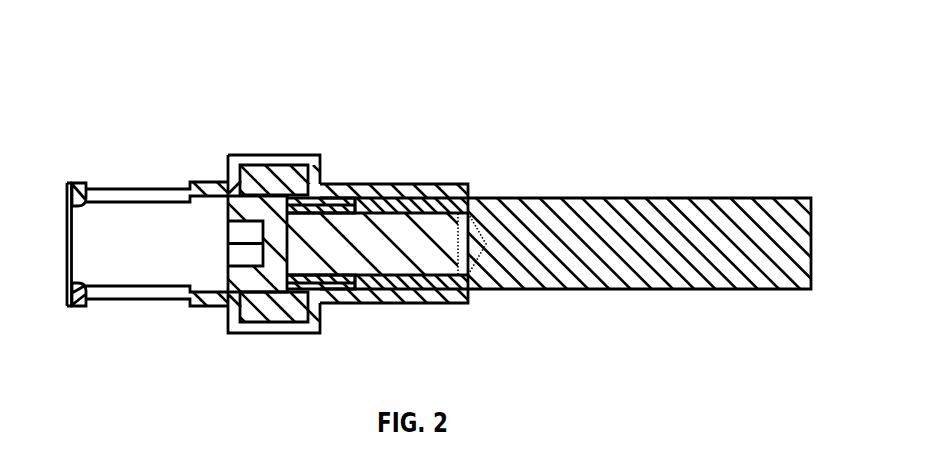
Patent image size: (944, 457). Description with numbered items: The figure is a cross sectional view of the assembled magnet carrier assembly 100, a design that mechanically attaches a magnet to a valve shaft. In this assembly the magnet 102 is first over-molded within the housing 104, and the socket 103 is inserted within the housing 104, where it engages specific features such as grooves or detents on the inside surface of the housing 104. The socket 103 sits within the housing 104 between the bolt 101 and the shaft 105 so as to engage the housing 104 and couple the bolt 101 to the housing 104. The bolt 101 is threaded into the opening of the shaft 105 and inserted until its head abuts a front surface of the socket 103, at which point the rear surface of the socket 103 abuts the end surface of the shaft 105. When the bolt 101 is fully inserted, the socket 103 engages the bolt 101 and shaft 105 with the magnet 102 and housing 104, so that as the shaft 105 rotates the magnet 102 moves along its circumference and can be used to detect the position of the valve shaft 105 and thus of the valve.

The magnet carrier assembly 100 is at (469, 48).
The bolt 101 is at (405, 235).
The magnet 102 is at (284, 182).
The socket 103 is at (338, 208).
The housing 104 is at (237, 157).
The shaft 105 is at (655, 233).